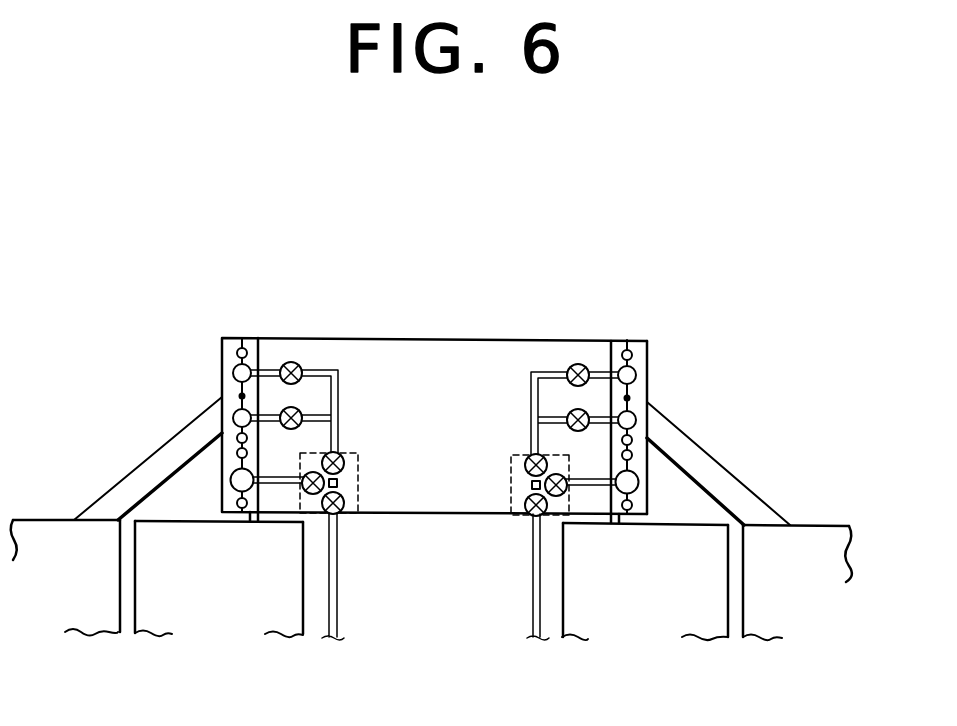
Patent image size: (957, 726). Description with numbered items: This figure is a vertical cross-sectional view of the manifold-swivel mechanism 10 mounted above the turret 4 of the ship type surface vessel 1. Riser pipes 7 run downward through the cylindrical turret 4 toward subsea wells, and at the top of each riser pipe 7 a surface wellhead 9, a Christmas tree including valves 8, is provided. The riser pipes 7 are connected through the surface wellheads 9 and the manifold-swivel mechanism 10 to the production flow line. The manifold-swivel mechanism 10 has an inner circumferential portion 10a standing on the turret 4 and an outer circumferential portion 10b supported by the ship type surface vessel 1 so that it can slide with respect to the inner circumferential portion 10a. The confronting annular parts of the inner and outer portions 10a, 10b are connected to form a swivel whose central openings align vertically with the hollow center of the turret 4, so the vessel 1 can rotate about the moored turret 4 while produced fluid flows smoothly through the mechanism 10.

The ship type surface vessel 1 is at (828, 526).
The turret 4 is at (698, 538).
The riser pipe 7 is at (337, 592).
The valves 8 is at (346, 464).
The surface wellhead 9 is at (508, 467).
The manifold-swivel mechanism 10 is at (220, 365).
The inner circumferential portion 10a is at (612, 355).
The outer circumferential portion 10b is at (647, 365).